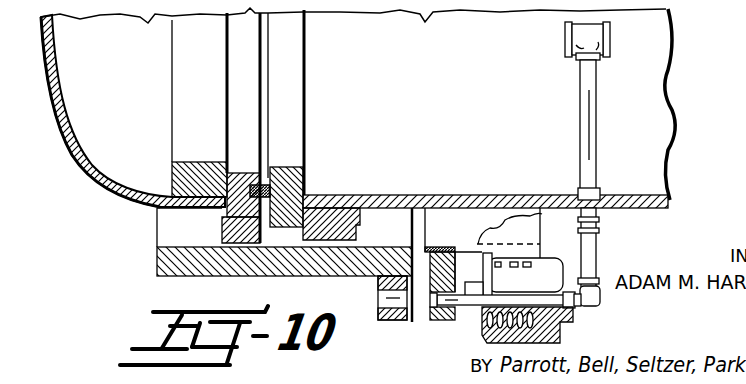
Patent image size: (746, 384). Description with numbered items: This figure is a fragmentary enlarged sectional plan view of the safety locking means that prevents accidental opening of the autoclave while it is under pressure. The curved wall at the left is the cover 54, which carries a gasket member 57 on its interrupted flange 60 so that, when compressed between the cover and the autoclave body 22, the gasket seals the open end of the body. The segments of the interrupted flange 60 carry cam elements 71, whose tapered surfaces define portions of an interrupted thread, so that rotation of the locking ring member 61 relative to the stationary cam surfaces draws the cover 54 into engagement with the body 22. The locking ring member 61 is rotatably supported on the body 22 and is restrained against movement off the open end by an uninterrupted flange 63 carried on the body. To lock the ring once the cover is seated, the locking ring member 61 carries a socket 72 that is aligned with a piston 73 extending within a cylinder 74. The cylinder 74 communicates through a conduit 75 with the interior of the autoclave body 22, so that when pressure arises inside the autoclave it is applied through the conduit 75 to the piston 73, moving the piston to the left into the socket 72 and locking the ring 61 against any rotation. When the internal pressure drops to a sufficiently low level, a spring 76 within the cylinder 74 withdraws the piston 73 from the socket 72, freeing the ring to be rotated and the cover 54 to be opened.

The autoclave body 22 is at (672, 197).
The cover 54 is at (68, 89).
The gasket member 57 is at (268, 178).
The interrupted flange 60 is at (243, 173).
The locking ring member 61 is at (158, 262).
The uninterrupted flange 63 is at (331, 196).
The cam elements 71 is at (222, 231).
The socket 72 is at (400, 320).
The piston 73 is at (466, 312).
The cylinder 74 is at (546, 268).
The conduit 75 is at (596, 256).
The spring 76 is at (499, 306).